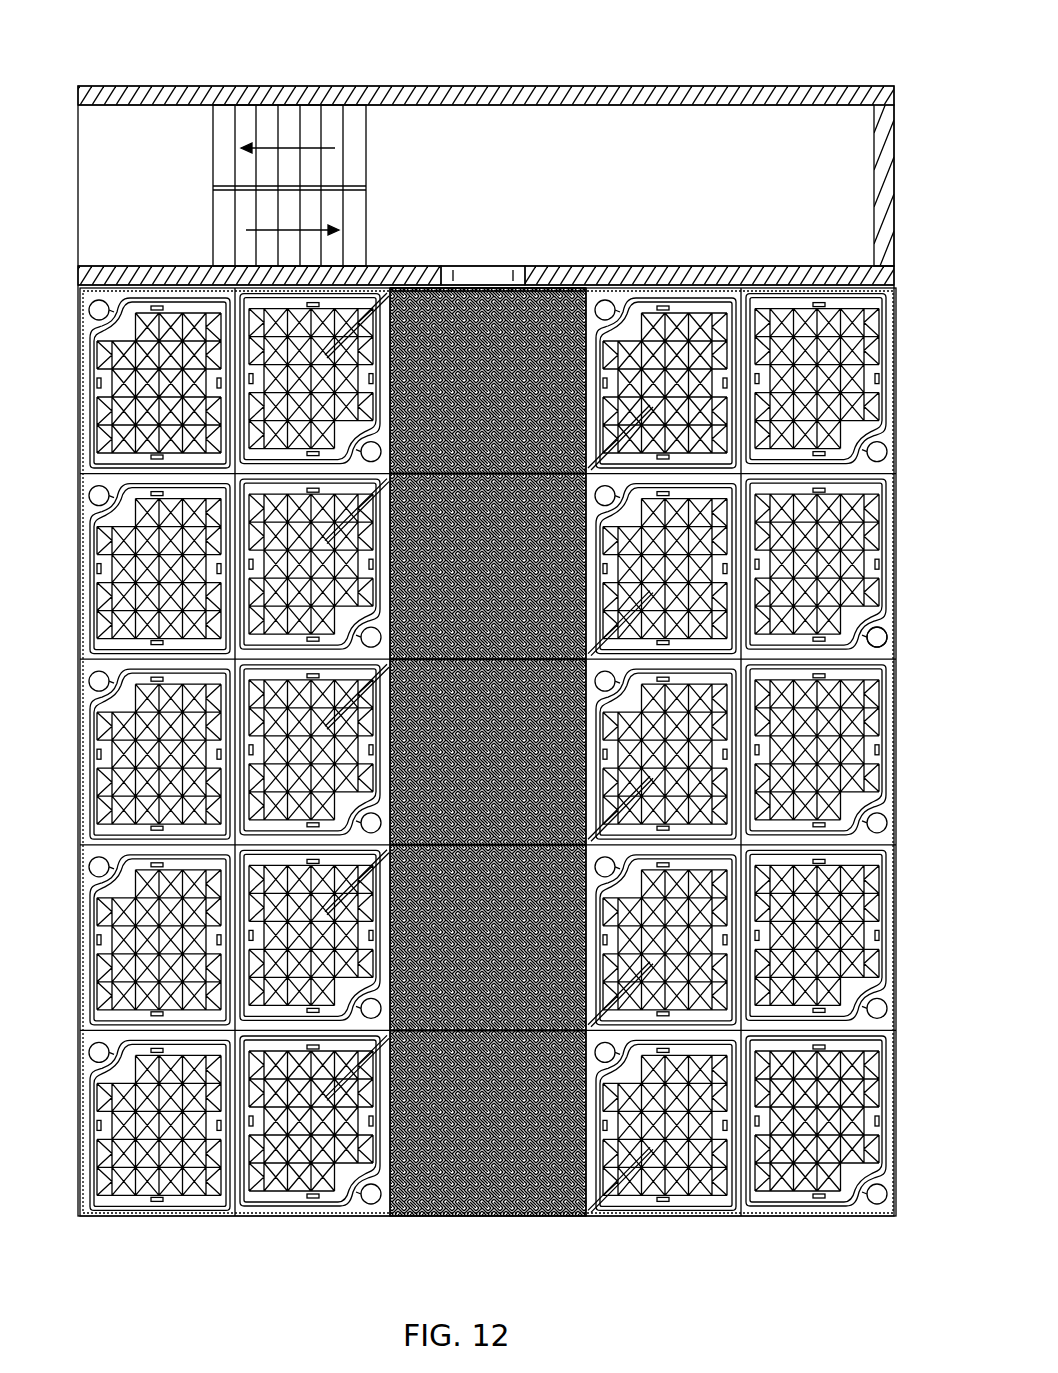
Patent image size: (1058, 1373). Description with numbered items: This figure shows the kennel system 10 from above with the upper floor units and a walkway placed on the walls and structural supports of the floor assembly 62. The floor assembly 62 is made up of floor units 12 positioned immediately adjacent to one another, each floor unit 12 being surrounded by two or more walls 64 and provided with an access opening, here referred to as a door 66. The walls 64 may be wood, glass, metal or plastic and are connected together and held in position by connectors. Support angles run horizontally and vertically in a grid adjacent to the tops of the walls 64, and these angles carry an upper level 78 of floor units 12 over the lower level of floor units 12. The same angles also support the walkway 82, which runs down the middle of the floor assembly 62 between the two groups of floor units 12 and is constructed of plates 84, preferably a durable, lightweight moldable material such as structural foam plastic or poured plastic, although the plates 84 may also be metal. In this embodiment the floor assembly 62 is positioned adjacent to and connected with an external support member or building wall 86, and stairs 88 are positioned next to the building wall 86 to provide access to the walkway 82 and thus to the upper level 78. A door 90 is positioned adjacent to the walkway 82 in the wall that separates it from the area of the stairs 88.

The kennel system 10 is at (628, 66).
The floor unit 12 is at (878, 527).
The floor assembly 62 is at (765, 63).
The wall 64 is at (72, 428).
The access opening 66 is at (630, 1180).
The upper level 78 is at (886, 618).
The walkway 82 is at (520, 278).
The plate 84 is at (562, 280).
The building wall 86 is at (738, 268).
The stairs 88 is at (323, 118).
The door 90 is at (472, 268).